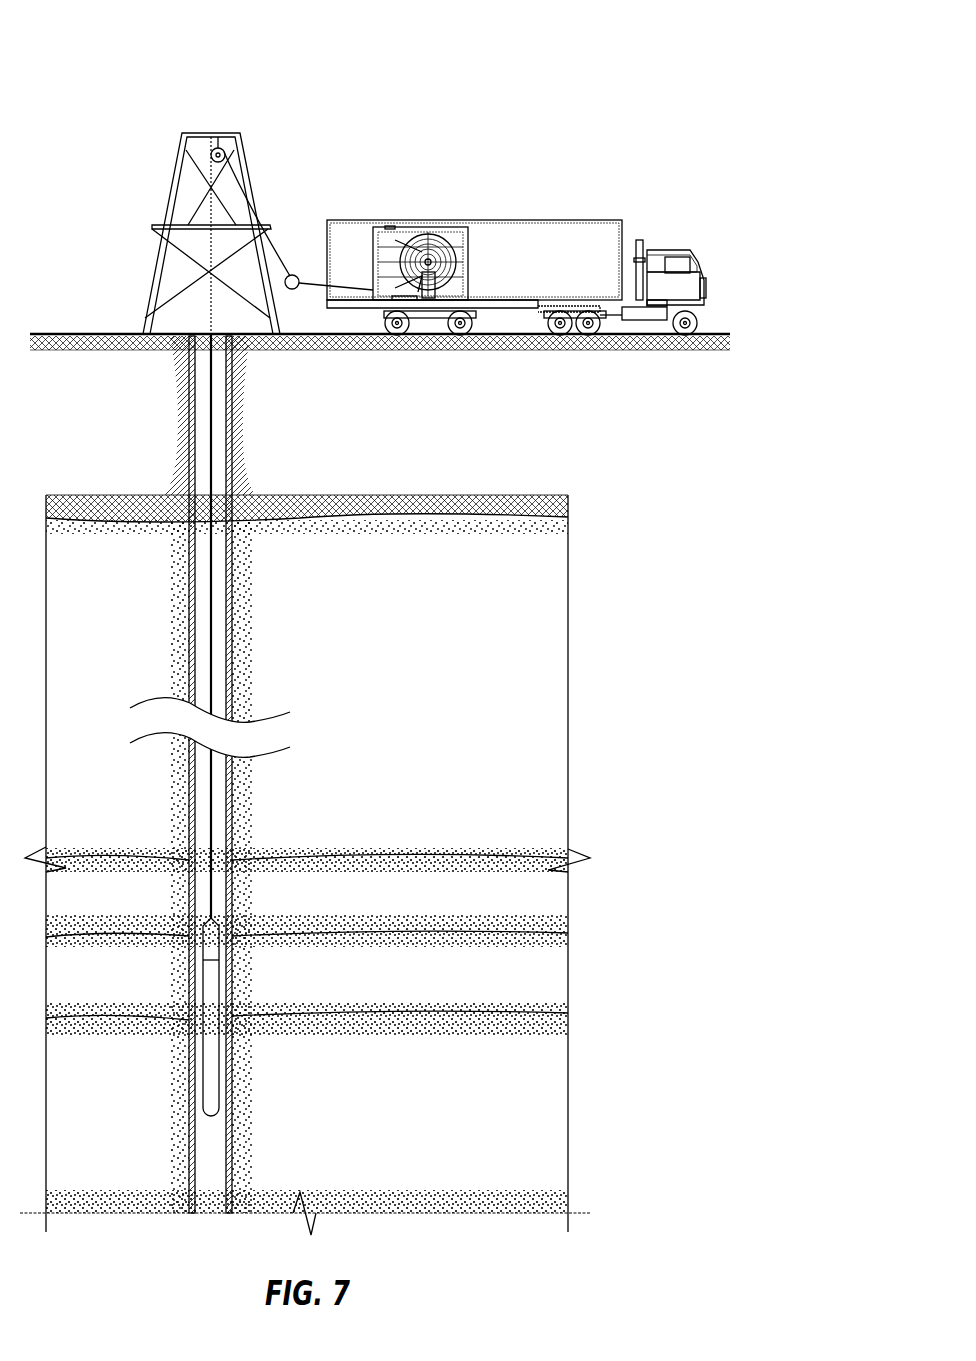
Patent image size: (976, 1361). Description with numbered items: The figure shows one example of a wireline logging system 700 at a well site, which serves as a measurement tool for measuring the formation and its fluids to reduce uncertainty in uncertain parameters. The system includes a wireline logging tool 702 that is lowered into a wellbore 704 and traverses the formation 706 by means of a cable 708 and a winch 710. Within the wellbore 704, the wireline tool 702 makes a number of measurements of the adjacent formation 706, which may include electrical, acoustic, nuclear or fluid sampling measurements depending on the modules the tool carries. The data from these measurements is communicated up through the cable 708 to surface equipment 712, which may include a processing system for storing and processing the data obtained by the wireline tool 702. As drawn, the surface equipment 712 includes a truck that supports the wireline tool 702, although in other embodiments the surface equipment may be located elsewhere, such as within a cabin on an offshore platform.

The wireline logging system 700 is at (525, 64).
The wireline logging tool 702 is at (210, 1047).
The wellbore 704 is at (234, 588).
The formation 706 is at (121, 1159).
The cable 708 is at (211, 638).
The winch 710 is at (226, 151).
The surface equipment 712 is at (497, 219).